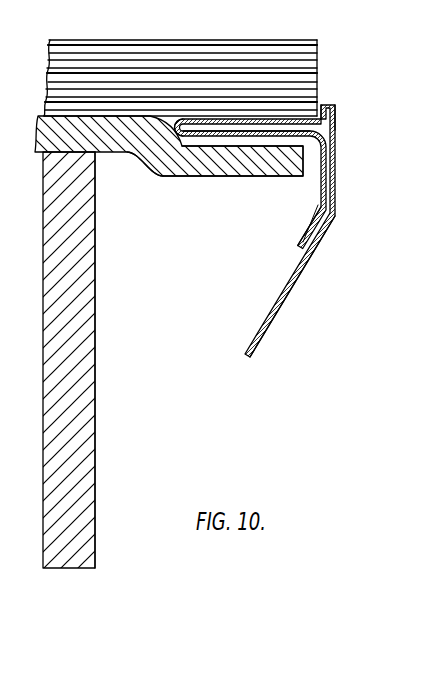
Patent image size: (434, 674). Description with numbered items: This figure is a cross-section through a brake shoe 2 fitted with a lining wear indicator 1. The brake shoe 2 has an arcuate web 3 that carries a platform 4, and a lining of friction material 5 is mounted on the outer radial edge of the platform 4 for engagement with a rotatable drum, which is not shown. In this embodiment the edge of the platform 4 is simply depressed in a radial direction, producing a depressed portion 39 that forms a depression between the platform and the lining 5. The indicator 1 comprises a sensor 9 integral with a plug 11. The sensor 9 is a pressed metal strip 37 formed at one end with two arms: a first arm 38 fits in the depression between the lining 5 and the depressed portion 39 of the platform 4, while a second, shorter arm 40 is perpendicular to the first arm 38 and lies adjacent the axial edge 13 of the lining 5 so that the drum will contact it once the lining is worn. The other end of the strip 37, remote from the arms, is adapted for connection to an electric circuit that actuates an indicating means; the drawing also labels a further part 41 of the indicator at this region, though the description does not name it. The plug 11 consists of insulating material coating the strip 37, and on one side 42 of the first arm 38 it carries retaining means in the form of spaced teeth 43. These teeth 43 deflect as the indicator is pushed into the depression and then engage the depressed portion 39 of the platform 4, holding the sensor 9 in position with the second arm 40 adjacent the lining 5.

The lining wear indicator 1 is at (338, 145).
The brake shoe 2 is at (95, 308).
The arcuate web 3 is at (93, 397).
The platform 4 is at (123, 144).
The lining of friction material 5 is at (149, 46).
The sensor 9 is at (338, 203).
The plug 11 is at (337, 190).
The axial edge of the lining 13 is at (323, 57).
The pressed metal strip 37 is at (337, 117).
The first arm 38 is at (165, 158).
The depressed portion of the platform 39 is at (300, 176).
The second arm 40 is at (328, 103).
The spring arm 41 is at (329, 238).
The side of the first arm 42 is at (232, 145).
The spaced teeth 43 is at (195, 148).